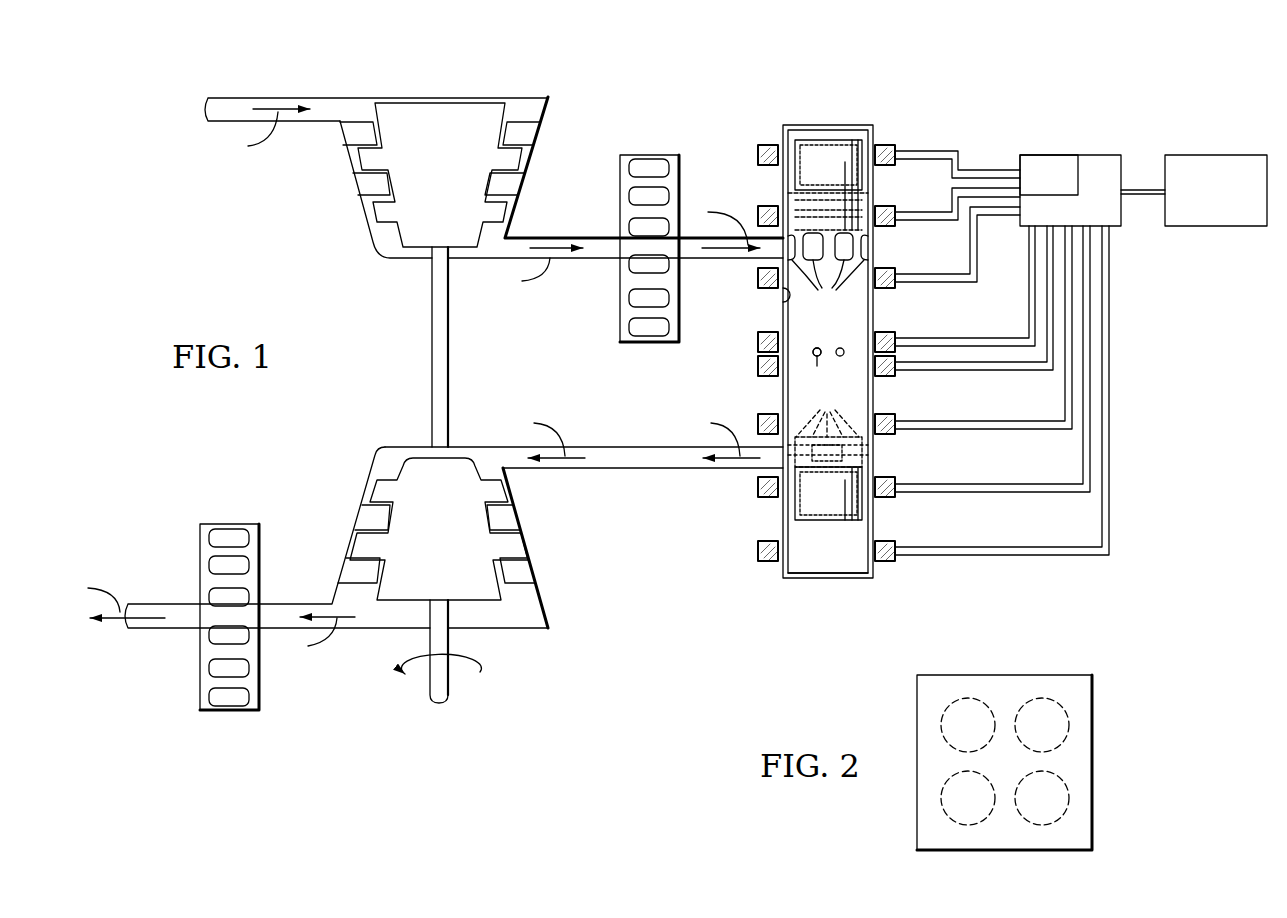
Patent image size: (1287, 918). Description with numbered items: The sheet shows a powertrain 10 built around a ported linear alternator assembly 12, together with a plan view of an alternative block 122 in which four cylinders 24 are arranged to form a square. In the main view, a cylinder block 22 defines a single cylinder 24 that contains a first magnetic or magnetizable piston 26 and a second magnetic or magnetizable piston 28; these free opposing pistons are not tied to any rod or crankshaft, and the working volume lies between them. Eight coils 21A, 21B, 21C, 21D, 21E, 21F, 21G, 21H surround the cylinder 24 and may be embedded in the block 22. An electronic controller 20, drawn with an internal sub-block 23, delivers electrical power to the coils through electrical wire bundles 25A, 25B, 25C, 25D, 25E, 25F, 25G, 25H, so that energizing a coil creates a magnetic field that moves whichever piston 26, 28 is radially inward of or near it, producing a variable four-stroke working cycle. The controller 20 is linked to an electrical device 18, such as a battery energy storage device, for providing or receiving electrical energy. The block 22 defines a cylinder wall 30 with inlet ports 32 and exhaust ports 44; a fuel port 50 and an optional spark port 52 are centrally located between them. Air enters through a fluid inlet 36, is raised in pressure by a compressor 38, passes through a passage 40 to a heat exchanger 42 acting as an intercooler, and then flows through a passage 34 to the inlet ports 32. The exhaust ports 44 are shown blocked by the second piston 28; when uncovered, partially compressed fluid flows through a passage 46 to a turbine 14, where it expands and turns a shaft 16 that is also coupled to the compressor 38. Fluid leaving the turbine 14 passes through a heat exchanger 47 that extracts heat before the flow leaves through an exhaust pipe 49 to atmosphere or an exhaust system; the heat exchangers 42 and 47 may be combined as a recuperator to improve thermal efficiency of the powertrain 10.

In FIG. 1, the powertrain 10 is at (940, 76).
In FIG. 1, the linear alternator assembly 12 is at (777, 584).
In FIG. 1, the turbine 14 is at (522, 604).
In FIG. 1, the shaft 16 is at (432, 353).
In FIG. 1, the electrical device 18 is at (1194, 190).
In FIG. 1, the electronic controller 20 is at (1070, 190).
In FIG. 1, the coil 21A is at (897, 146).
In FIG. 1, the coil 21B is at (897, 207).
In FIG. 1, the coil 21C is at (897, 269).
In FIG. 1, the coil 21D is at (897, 333).
In FIG. 1, the coil 21E is at (897, 377).
In FIG. 1, the coil 21F is at (897, 436).
In FIG. 1, the coil 21G is at (897, 499).
In FIG. 1, the coil 21H is at (897, 562).
In FIG. 1, the cylinder block 22 is at (862, 580).
In FIG. 1, the processor 23 is at (1049, 175).
In FIG. 1, the cylinder 24 is at (836, 558).
In FIG. 2, the cylinder 24 is at (945, 718).
In FIG. 1, the electrical wire bundle 25A is at (951, 148).
In FIG. 1, the electrical wire bundle 25B is at (988, 188).
In FIG. 1, the electrical wire bundle 25C is at (980, 238).
In FIG. 1, the electrical wire bundle 25D is at (952, 338).
In FIG. 1, the electrical wire bundle 25E is at (980, 370).
In FIG. 1, the electrical wire bundle 25F is at (1072, 400).
In FIG. 1, the electrical wire bundle 25G is at (1090, 453).
In FIG. 1, the electrical wire bundle 25H is at (1109, 515).
In FIG. 1, the first magnetic or magnetizable piston 26 is at (828, 185).
In FIG. 1, the second magnetic or magnetizable piston 28 is at (828, 493).
In FIG. 1, the cylinder wall 30 is at (782, 307).
In FIG. 1, the inlet ports 32 is at (828, 274).
In FIG. 1, the passage 34 is at (742, 258).
In FIG. 1, the fluid inlet 36 is at (233, 107).
In FIG. 1, the compressor 38 is at (510, 110).
In FIG. 1, the passage 40 is at (593, 260).
In FIG. 1, the heat exchanger 42 is at (642, 155).
In FIG. 1, the exhaust ports 44 is at (828, 427).
In FIG. 1, the passage 46 is at (652, 470).
In FIG. 1, the heat exchanger 47 is at (232, 712).
In FIG. 1, the exhaust pipe 49 is at (165, 632).
In FIG. 1, the fuel port 50 is at (818, 358).
In FIG. 1, the spark port 52 is at (840, 346).
In FIG. 2, the block 122 is at (1007, 675).